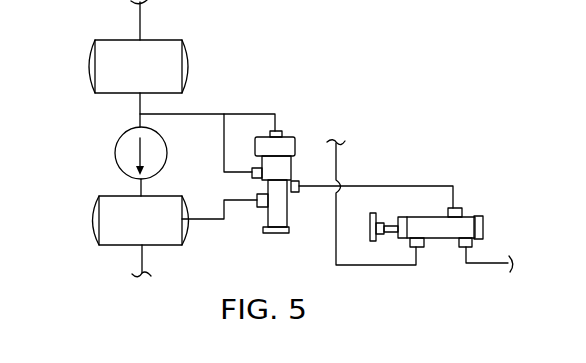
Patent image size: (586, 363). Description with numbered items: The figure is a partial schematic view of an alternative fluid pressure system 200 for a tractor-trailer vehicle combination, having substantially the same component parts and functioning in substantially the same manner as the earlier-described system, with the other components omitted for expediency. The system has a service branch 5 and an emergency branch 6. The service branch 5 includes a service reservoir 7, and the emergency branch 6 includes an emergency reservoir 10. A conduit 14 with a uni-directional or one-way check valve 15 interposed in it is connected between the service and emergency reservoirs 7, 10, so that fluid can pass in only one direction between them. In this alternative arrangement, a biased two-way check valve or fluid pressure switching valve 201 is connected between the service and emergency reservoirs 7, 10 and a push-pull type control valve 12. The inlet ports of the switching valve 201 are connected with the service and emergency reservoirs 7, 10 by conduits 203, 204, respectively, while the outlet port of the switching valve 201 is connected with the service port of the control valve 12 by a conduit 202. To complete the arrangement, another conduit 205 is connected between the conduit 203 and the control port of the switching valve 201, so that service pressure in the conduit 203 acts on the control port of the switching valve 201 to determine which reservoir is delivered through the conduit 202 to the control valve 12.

The service branch 5 is at (94, 122).
The emergency branch 6 is at (88, 268).
The service reservoir 7 is at (160, 39).
The emergency reservoir 10 is at (168, 246).
The push-pull type control valve 12 is at (437, 241).
The conduit 14 is at (143, 190).
The one-way check valve 15 is at (117, 165).
The alternative fluid pressure system 200 is at (226, 70).
The fluid pressure switching valve 201 is at (290, 207).
The conduit 202 is at (364, 186).
The conduit 203 is at (176, 116).
The conduit 204 is at (228, 206).
The conduit 205 is at (247, 112).